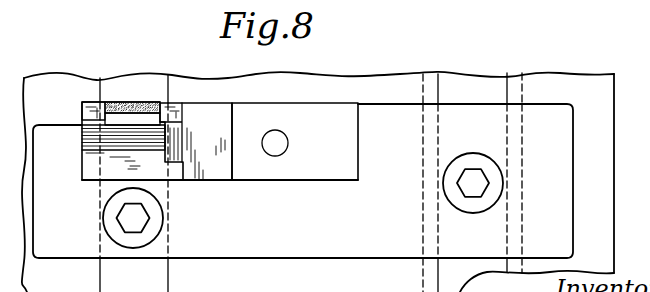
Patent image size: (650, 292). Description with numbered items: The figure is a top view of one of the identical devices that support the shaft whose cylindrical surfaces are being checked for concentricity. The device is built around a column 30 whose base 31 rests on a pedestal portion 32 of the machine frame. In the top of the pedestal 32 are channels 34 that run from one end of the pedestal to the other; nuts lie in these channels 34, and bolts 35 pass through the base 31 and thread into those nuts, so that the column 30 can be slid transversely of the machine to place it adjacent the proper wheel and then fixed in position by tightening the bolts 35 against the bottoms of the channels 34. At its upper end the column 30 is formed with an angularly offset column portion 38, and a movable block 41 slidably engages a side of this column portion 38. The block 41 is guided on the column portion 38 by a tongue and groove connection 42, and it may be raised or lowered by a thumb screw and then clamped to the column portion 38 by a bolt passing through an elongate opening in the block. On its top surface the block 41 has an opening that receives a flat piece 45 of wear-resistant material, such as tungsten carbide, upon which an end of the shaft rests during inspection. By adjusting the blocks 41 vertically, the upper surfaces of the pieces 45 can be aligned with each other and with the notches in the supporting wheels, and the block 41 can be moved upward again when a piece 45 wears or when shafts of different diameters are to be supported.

The column 30 is at (265, 182).
The base 31 is at (565, 127).
The pedestal portion 32 is at (557, 82).
The channel 34 is at (170, 271).
The bolt 35 is at (152, 218).
The column portion 38 is at (328, 119).
The movable block 41 is at (92, 170).
The tongue and groove connection 42 is at (172, 125).
The flat piece of wear-resistant material 45 is at (138, 102).